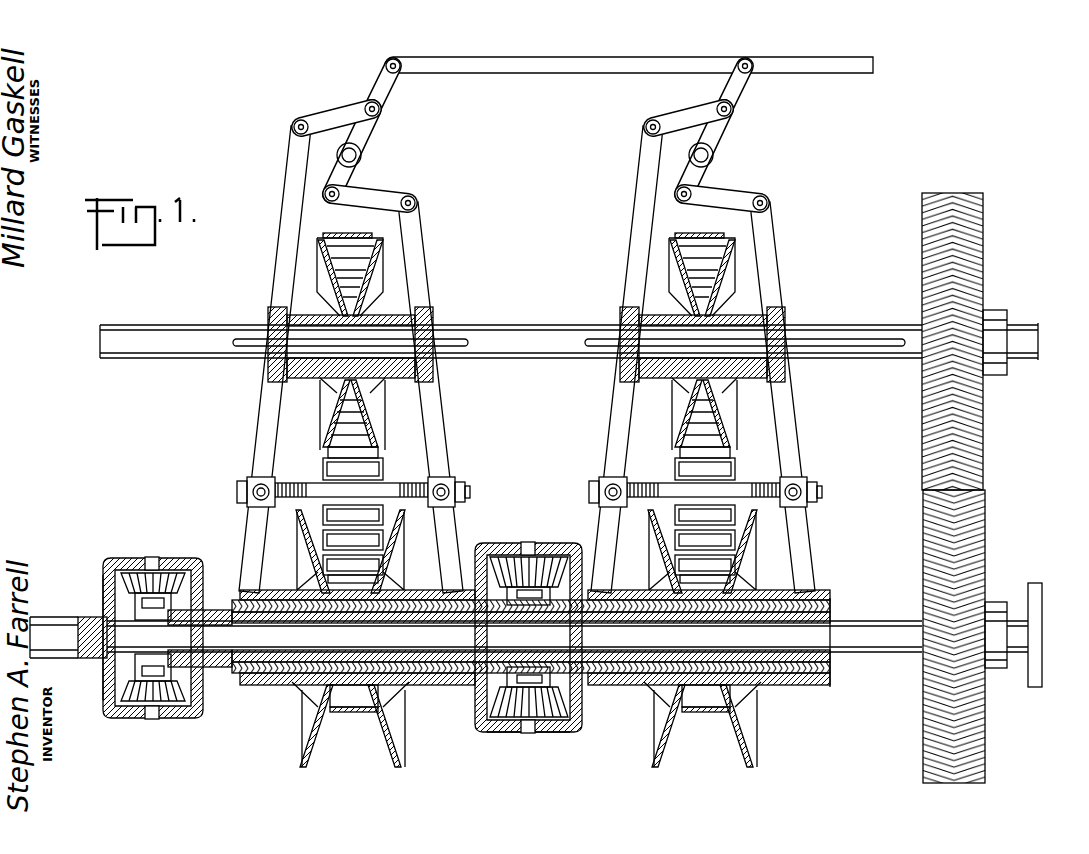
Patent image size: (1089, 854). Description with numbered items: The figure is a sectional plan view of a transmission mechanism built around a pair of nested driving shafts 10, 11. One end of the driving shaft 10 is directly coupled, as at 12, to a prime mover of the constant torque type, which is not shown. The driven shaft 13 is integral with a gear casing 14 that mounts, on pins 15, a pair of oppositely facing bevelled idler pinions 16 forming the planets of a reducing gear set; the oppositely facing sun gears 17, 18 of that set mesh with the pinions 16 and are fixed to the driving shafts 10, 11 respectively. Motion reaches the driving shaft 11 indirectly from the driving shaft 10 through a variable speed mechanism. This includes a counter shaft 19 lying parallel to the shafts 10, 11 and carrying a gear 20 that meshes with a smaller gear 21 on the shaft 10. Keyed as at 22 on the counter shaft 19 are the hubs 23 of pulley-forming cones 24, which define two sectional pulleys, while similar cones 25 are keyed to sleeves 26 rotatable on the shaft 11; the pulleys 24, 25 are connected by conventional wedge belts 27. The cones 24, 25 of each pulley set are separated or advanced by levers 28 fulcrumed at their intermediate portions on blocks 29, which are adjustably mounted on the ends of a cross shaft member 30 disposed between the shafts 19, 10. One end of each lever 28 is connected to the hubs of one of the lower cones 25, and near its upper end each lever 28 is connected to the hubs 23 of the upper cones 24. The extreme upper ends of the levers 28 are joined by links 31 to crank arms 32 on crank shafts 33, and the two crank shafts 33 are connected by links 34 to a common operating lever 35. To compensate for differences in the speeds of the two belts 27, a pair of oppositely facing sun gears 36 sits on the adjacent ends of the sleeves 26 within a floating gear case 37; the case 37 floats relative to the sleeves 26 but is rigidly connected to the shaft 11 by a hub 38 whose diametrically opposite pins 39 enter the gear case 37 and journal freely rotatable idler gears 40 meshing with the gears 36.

The driving shaft 10 is at (567, 624).
The driving shaft 11 is at (830, 618).
The coupling 12 is at (1042, 600).
The driven shaft 13 is at (56, 618).
The gear casing 14 is at (120, 558).
The pins 15 is at (158, 558).
The bevelled idler pinions 16 is at (172, 578).
The sun gear 17 is at (105, 592).
The sun gear 18 is at (204, 590).
The counter shaft 19 is at (522, 325).
The gear 20 is at (985, 272).
The gear 21 is at (987, 548).
The key 22 is at (448, 340).
The hubs 23 is at (294, 320).
The pulley-forming cones 24 is at (372, 282).
The cones 25 is at (305, 562).
The sleeves 26 is at (268, 687).
The wedge belts 27 is at (386, 466).
The levers 28 is at (256, 450).
The blocks 29 is at (250, 480).
The cross shaft member 30 is at (318, 485).
The links 31 is at (340, 114).
The crank arms 32 is at (370, 140).
The crank shaft 33 is at (362, 157).
The links 34 is at (389, 88).
The operating lever 35 is at (547, 73).
The sun gears 36 is at (495, 543).
The floating gear case 37 is at (560, 732).
The hub 38 is at (505, 733).
The pins 39 is at (535, 555).
The idler gears 40 is at (528, 560).